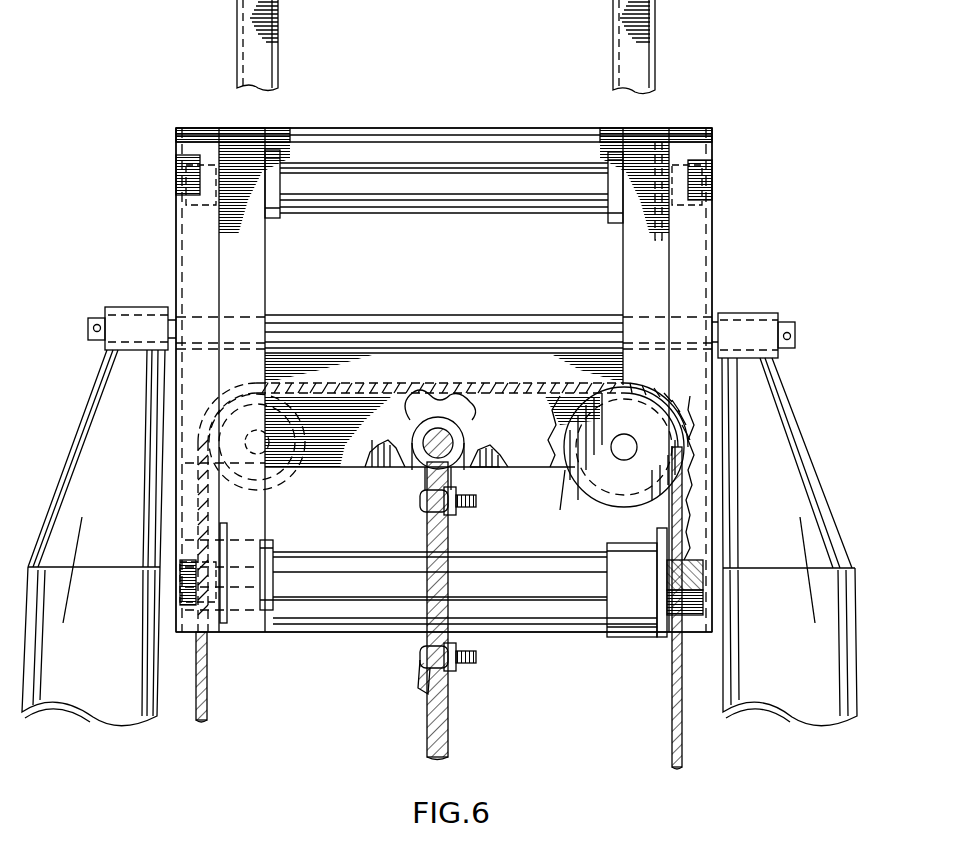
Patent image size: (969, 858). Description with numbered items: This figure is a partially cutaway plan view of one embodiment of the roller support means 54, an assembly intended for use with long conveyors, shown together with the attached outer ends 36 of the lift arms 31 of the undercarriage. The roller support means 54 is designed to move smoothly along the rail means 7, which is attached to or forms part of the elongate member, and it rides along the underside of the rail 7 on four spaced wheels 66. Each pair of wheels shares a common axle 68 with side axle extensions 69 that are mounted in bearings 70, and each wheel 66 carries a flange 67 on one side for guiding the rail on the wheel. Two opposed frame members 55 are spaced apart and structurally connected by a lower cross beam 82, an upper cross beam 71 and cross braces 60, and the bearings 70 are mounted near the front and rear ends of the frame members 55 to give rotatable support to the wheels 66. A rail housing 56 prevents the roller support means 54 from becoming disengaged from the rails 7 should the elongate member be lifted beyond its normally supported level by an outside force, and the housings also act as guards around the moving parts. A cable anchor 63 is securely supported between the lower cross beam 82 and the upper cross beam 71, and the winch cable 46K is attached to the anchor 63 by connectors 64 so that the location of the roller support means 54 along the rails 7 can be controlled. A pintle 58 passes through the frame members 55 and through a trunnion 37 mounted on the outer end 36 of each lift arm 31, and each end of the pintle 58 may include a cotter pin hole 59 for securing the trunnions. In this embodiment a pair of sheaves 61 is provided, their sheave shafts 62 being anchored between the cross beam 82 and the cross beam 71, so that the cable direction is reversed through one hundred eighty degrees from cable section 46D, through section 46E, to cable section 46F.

The rail means 7 is at (262, 50).
The lift arm 31 is at (115, 670).
The outer end of lift arm 36 is at (105, 432).
The trunnion 37 is at (140, 327).
The cable section 46D is at (205, 697).
The cable section 46E is at (497, 385).
The cable section 46F is at (673, 745).
The winch cable 46K is at (448, 732).
The roller support means 54 is at (142, 97).
The frame member 55 is at (180, 232).
The rail housing 56 is at (207, 142).
The pintle 58 is at (100, 322).
The cotter pin hole 59 is at (93, 330).
The cross brace 60 is at (502, 135).
The sheave 61 is at (288, 452).
The sheave shaft 62 is at (258, 455).
The cable anchor 63 is at (422, 468).
The connector 64 is at (420, 498).
The wheel 66 is at (270, 160).
The flange 67 is at (680, 130).
The axle 68 is at (578, 190).
The side axle extension 69 is at (192, 192).
The bearing 70 is at (182, 165).
The upper cross beam 71 is at (516, 437).
The lower cross beam 82 is at (478, 432).